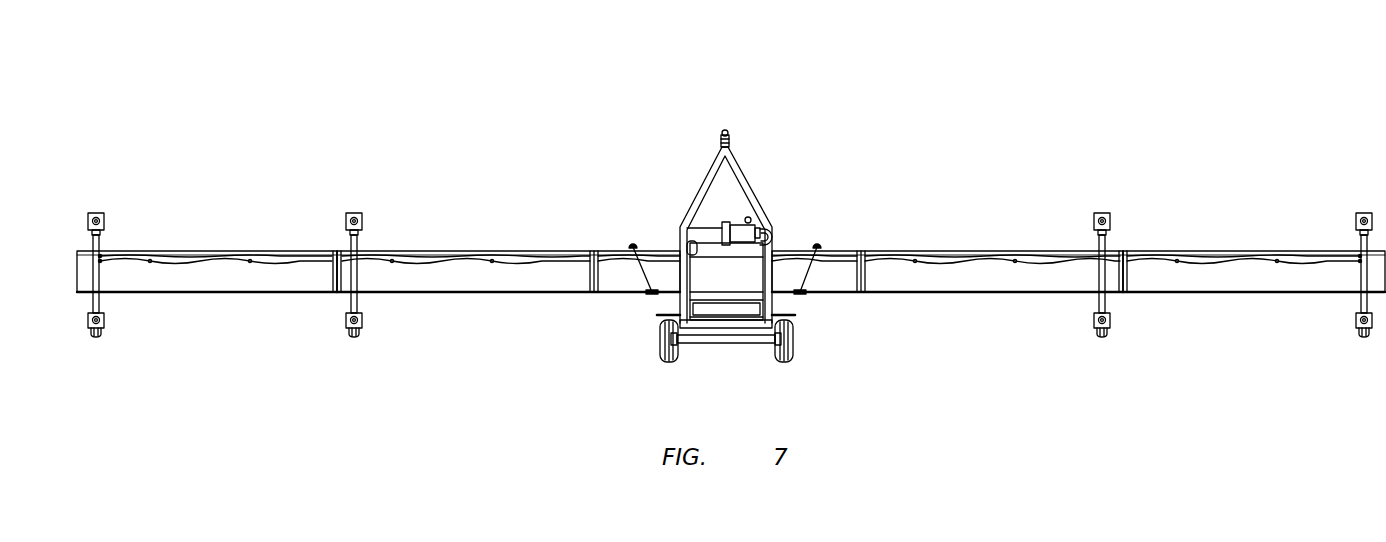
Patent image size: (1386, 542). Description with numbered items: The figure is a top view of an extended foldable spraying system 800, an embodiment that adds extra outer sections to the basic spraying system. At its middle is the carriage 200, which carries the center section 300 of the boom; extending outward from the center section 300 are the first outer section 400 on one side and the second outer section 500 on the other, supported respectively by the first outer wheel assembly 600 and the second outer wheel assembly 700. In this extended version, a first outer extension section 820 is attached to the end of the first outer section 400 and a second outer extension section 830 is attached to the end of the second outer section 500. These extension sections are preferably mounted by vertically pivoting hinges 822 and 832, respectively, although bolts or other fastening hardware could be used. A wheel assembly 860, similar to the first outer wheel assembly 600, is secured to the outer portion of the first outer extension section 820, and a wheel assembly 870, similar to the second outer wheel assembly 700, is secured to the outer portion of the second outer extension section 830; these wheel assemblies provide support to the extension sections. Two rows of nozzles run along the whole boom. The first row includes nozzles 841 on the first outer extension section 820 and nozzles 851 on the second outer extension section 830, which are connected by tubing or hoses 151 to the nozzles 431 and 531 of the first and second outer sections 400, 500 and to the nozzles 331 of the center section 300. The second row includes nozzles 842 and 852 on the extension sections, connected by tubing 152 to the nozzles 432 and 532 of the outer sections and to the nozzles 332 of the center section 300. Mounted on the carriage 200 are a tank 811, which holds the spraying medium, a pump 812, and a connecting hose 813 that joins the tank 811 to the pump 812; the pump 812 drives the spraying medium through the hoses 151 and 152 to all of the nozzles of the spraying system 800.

The extended foldable spraying system 800 is at (868, 88).
The wheel assembly 870 is at (96, 212).
The wheel assembly 860 is at (1364, 212).
The second outer wheel assembly 700 is at (352, 212).
The first outer wheel assembly 600 is at (1103, 212).
The nozzles 851 is at (143, 255).
The nozzles 852 is at (208, 265).
The tubing or hoses 151 is at (203, 255).
The tubing or hoses 152 is at (170, 265).
The nozzles 531 is at (403, 255).
The nozzles 532 is at (470, 255).
The nozzles 431 is at (935, 255).
The nozzles 432 is at (987, 258).
The nozzles 841 is at (1155, 255).
The nozzles 842 is at (1250, 265).
The second outer extension section 830 is at (280, 292).
The vertically pivoting hinge 832 is at (333, 292).
The first outer extension section 820 is at (1180, 292).
The vertically pivoting hinge 822 is at (1130, 278).
The second outer section 500 is at (475, 292).
The first outer section 400 is at (977, 292).
The center section 300 is at (800, 255).
The nozzles 331 is at (681, 242).
The nozzles 332 is at (672, 263).
The carriage 200 is at (704, 175).
The tank 811 is at (727, 290).
The pump 812 is at (735, 225).
The connecting hose 813 is at (778, 240).